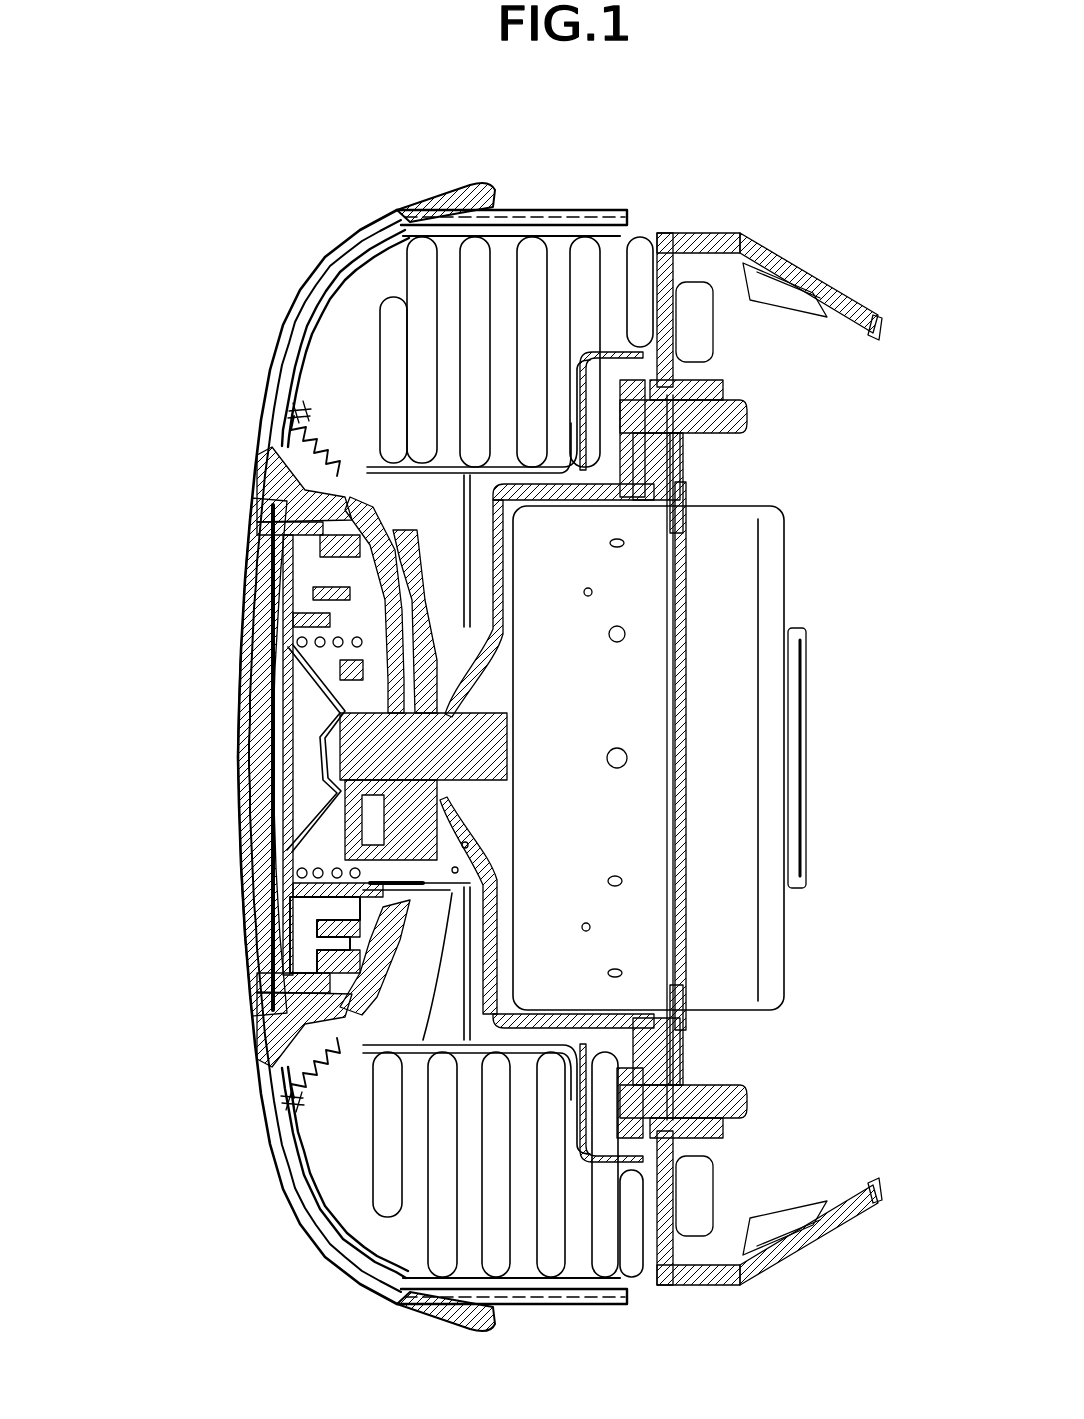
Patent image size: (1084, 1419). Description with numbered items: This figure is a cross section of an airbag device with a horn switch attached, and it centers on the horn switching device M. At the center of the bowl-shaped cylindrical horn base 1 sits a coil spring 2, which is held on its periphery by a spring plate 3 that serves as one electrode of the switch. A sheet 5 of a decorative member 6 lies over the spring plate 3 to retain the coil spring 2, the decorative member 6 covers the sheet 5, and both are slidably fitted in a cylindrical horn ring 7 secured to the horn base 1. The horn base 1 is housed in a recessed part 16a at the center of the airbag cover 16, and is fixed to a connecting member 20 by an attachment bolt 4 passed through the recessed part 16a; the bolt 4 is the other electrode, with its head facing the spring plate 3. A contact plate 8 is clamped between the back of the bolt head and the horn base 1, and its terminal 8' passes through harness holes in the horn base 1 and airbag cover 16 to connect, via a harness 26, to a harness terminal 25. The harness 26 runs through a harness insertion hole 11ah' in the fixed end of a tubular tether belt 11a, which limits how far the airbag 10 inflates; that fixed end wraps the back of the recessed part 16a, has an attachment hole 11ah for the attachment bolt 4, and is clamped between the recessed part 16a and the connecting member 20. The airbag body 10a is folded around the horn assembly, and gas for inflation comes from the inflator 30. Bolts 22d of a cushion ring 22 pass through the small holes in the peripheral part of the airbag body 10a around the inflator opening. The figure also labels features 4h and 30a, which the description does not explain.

The horn switching device M is at (150, 492).
The horn base 1 is at (273, 495).
The coil spring 2 is at (340, 650).
The spring plate 3 is at (330, 675).
The attachment bolt 4 is at (350, 748).
The hole of horn plate 4h is at (300, 897).
The sheet 5 is at (330, 780).
The decorative member 6 is at (262, 840).
The horn ring 7 is at (330, 977).
The contact plate 8 is at (314, 749).
The terminal 8' is at (266, 1038).
The airbag 10 is at (124, 206).
The airbag body 10a is at (408, 268).
The tubular tether belt 11a is at (442, 590).
The attachment hole 11ah is at (700, 839).
The harness insertion hole 11ah' is at (708, 887).
The airbag cover 16 is at (367, 218).
The recessed part 16a is at (442, 713).
The connecting member 20 is at (500, 562).
The cushion ring 22 is at (683, 450).
The bolts 22d is at (730, 393).
The harness terminal 25 is at (470, 870).
The harness 26 is at (737, 1060).
The inflator 30 is at (723, 677).
The connector of inflator 30a is at (619, 758).